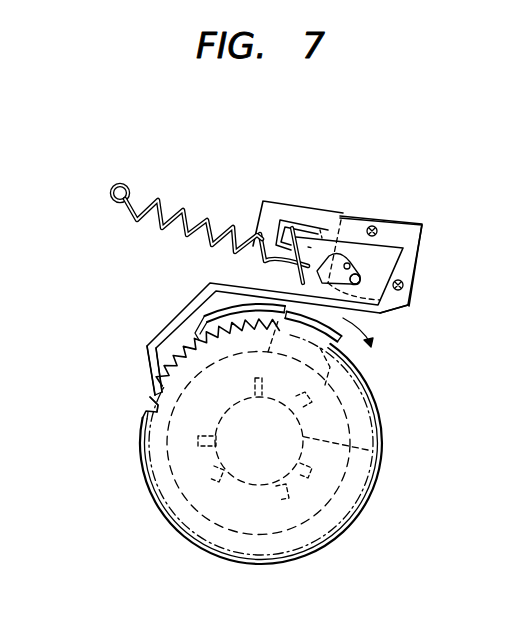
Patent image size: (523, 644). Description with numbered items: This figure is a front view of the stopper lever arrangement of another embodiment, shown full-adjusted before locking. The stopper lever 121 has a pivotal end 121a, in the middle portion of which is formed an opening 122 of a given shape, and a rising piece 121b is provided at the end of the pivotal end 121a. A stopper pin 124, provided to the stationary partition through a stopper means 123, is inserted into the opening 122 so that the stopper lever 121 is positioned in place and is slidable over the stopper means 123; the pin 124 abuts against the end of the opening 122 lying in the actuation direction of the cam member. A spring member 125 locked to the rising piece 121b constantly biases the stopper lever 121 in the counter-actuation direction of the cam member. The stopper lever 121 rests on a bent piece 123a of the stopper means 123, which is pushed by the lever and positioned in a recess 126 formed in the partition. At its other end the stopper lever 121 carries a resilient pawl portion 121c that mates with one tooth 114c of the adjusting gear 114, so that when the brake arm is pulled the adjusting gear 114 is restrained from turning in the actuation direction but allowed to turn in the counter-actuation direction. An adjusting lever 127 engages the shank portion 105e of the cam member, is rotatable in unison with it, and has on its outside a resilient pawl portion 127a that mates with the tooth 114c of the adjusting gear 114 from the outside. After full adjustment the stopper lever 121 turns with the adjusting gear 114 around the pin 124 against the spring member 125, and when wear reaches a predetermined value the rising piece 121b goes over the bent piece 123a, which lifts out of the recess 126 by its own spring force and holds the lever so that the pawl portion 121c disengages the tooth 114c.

The shank portion 105e is at (368, 450).
The adjusting gear 114 is at (140, 438).
The tooth 114c is at (150, 384).
The stopper lever 121 is at (193, 290).
The pivotal end 121a is at (408, 299).
The rising piece 121b is at (300, 281).
The resilient pawl portion 121c is at (150, 346).
The opening 122 is at (353, 266).
The stopper means 123 is at (365, 218).
The bent piece 123a is at (300, 232).
The stopper pin 124 is at (375, 292).
The spring member 125 is at (202, 207).
The recess 126 is at (270, 200).
The adjusting lever 127 is at (210, 308).
The resilient pawl portion 127a is at (193, 333).